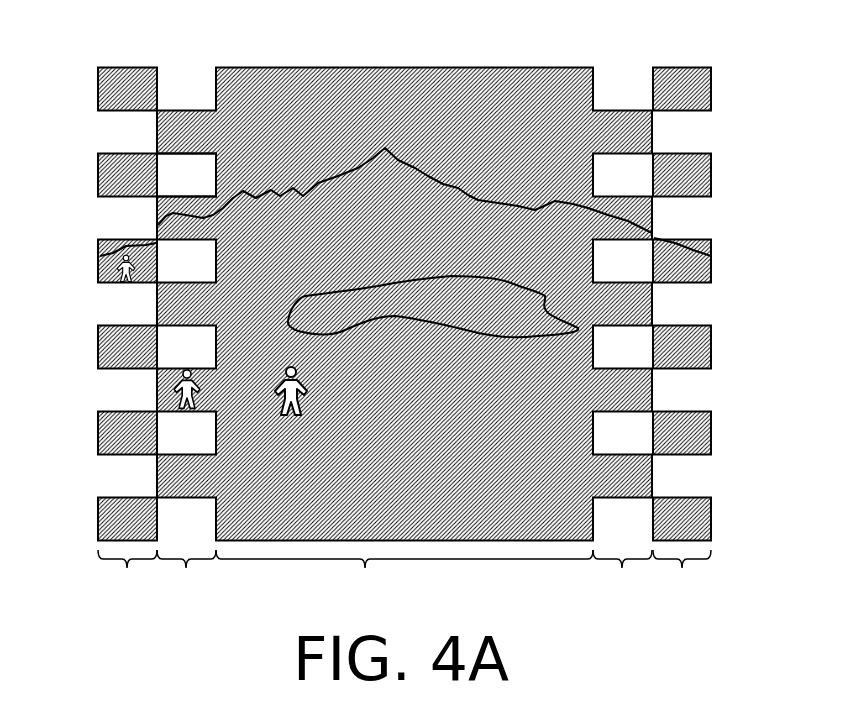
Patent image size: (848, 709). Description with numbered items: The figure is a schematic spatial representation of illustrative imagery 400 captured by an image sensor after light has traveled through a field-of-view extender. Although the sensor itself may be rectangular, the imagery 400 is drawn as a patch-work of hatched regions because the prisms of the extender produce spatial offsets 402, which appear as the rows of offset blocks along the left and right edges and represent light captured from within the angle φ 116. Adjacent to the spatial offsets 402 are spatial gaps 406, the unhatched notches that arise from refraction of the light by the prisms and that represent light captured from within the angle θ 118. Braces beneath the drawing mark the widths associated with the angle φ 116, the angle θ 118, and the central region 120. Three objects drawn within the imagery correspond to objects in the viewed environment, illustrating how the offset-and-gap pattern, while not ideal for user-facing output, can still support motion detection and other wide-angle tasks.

The imagery 400 is at (696, 40).
The spatial offsets 402 is at (102, 67).
The spatial gaps 406 is at (156, 155).
The angle θ 118 is at (98, 573).
The angle φ 116 is at (193, 578).
The central region of width beta 120 is at (389, 579).